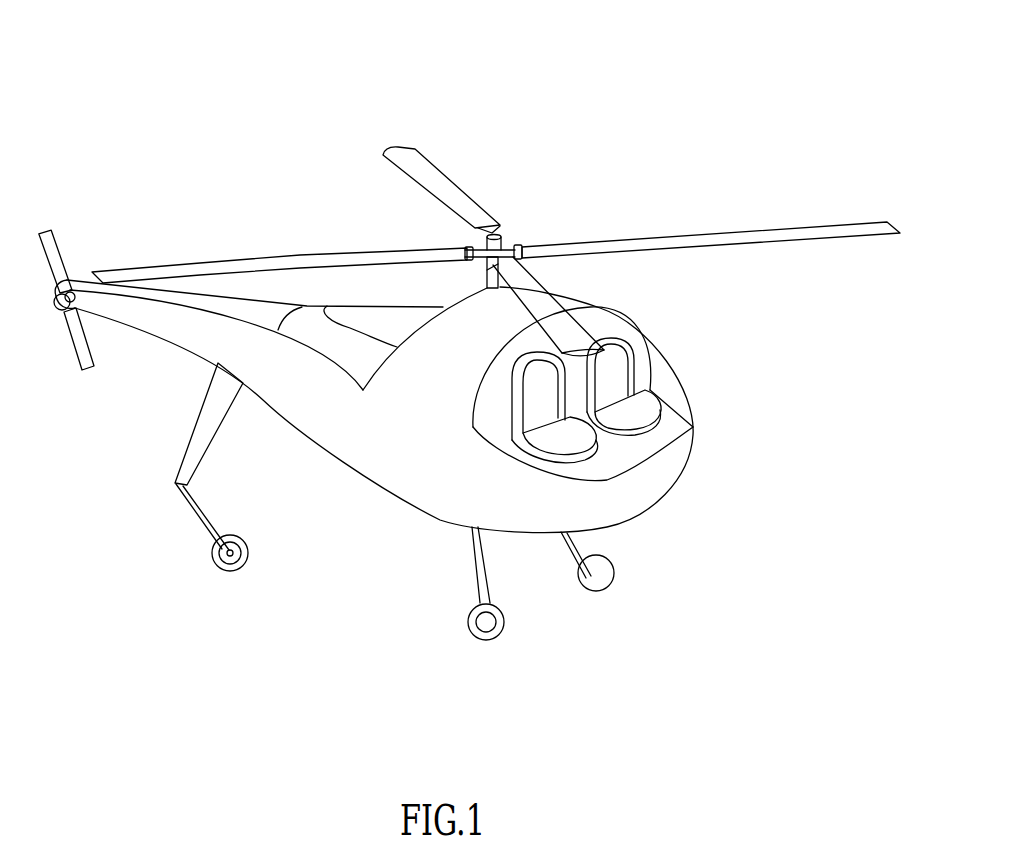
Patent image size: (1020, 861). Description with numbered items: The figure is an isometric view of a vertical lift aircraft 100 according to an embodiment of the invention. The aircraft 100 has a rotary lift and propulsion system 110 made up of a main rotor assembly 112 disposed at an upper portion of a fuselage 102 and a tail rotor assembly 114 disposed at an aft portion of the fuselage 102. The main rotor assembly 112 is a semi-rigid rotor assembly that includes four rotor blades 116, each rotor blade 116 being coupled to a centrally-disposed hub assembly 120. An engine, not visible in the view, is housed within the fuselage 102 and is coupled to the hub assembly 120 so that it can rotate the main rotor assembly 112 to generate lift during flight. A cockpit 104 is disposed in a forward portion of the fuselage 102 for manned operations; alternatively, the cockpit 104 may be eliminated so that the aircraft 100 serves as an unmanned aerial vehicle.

The vertical lift aircraft 100 is at (178, 127).
The fuselage 102 is at (693, 408).
The cockpit 104 is at (711, 368).
The rotary lift and propulsion system 110 is at (640, 72).
The main rotor assembly 112 is at (493, 160).
The tail rotor assembly 114 is at (45, 345).
The rotor blades 116 is at (427, 182).
The hub assembly 120 is at (512, 223).